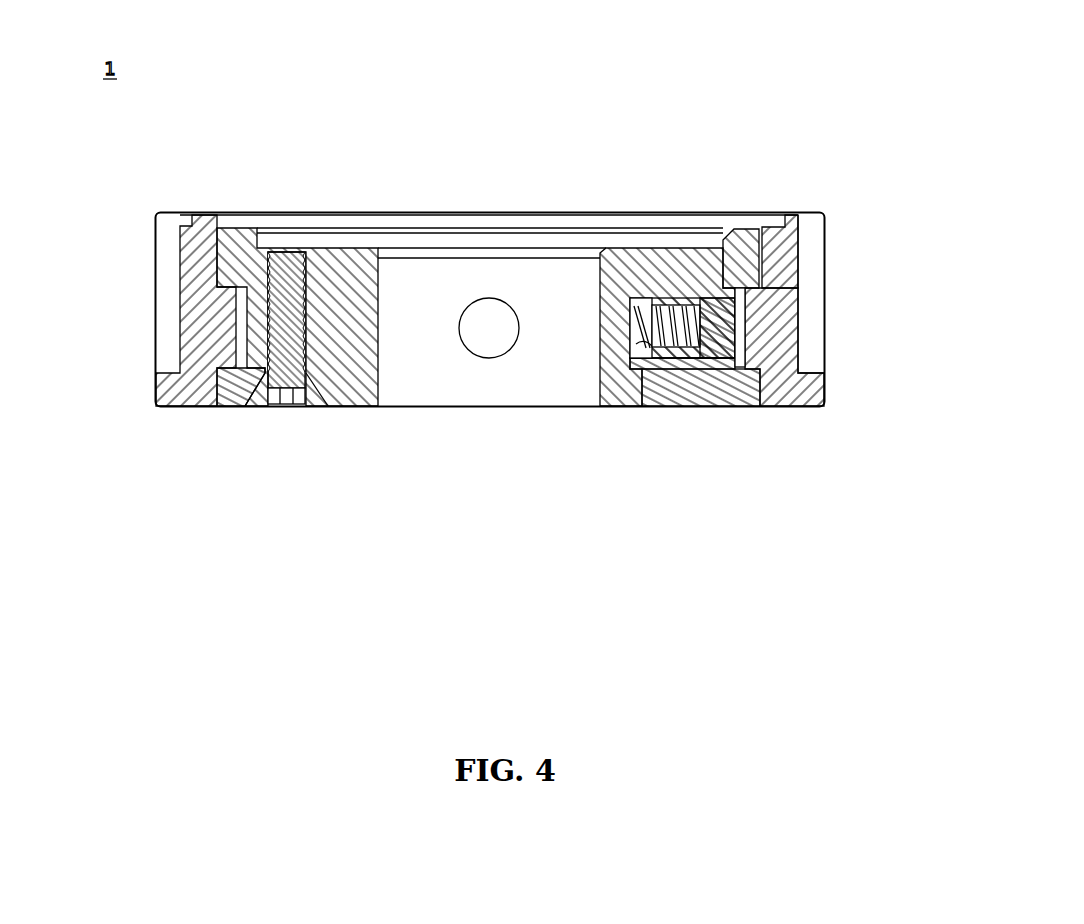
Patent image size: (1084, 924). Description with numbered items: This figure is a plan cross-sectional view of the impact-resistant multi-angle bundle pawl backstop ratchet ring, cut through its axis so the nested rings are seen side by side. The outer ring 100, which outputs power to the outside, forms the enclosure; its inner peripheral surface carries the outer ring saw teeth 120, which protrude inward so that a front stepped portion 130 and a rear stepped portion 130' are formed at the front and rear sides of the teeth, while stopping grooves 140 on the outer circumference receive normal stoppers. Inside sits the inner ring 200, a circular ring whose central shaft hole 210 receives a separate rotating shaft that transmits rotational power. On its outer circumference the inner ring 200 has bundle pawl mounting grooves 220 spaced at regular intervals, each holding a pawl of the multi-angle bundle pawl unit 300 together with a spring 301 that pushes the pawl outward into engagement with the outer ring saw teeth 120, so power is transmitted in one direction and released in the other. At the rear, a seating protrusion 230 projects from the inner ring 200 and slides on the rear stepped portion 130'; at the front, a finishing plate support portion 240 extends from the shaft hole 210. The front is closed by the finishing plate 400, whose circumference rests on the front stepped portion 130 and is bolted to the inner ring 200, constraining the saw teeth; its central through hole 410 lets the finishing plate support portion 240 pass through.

The outer ring 100 is at (200, 317).
The outer ring saw teeth 120 is at (742, 368).
The front stepped portion 130 is at (819, 420).
The rear stepped portion 130' is at (850, 225).
The stopping grooves 140 is at (800, 332).
The inner ring 200 is at (345, 268).
The shaft hole 210 is at (600, 343).
The bundle pawl mounting grooves 220 is at (633, 362).
The seating protrusion 230 is at (752, 236).
The finishing plate support portion 240 is at (360, 408).
The multi-angle bundle pawl unit 300 is at (702, 290).
The spring 301 is at (660, 300).
The finishing plate 400 is at (678, 392).
The through hole 410 is at (348, 408).